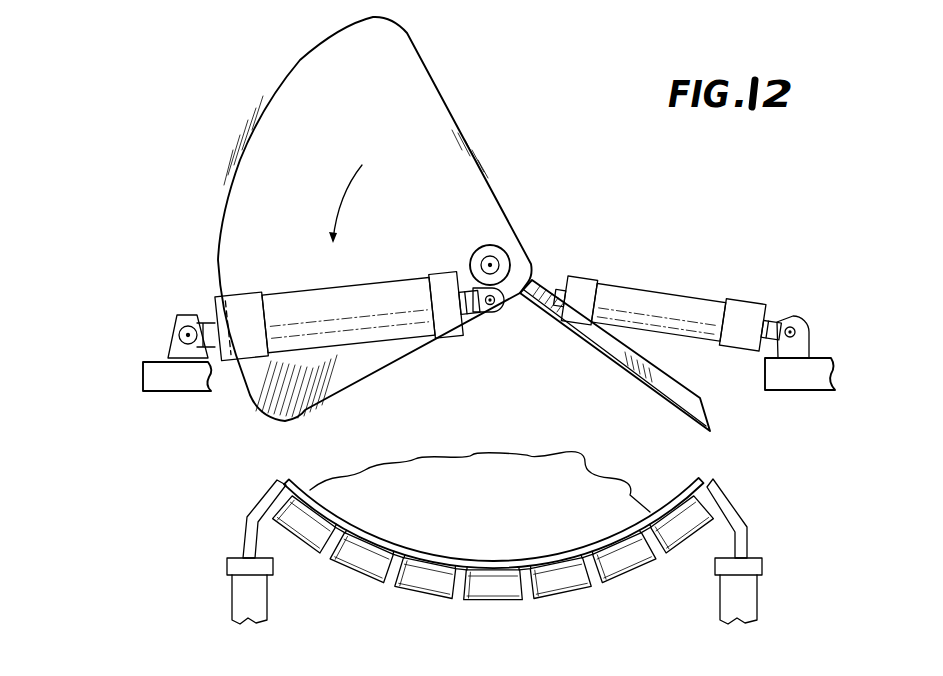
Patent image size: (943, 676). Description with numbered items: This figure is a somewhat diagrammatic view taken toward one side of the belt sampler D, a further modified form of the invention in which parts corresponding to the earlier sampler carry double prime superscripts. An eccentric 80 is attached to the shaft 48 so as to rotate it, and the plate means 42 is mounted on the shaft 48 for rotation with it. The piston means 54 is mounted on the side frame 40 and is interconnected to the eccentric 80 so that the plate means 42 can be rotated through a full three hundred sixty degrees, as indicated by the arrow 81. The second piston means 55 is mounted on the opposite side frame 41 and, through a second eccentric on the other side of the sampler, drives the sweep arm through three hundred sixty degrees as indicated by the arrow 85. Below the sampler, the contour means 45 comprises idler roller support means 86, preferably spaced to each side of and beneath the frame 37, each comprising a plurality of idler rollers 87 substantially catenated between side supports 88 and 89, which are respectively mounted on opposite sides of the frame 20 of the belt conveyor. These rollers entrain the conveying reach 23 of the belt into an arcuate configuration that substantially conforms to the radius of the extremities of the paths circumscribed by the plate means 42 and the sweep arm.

The belt sampler D is at (175, 200).
The plate means 42 is at (248, 110).
The arrow 85 is at (351, 181).
The eccentric 80 is at (496, 247).
The shaft 48 is at (491, 265).
The arrow 81 is at (576, 410).
The piston means 54 is at (372, 290).
The side frame 40 is at (146, 375).
The piston means 55 is at (696, 268).
The frame 37 is at (880, 312).
The side frame 41 is at (816, 384).
The conveying reach 23 is at (500, 527).
The contour means 45 is at (493, 572).
The idler roller support means 86 is at (500, 606).
The idler rollers 87 is at (617, 565).
The side support 88 is at (252, 511).
The side support 89 is at (742, 518).
The frame 20 is at (240, 595).